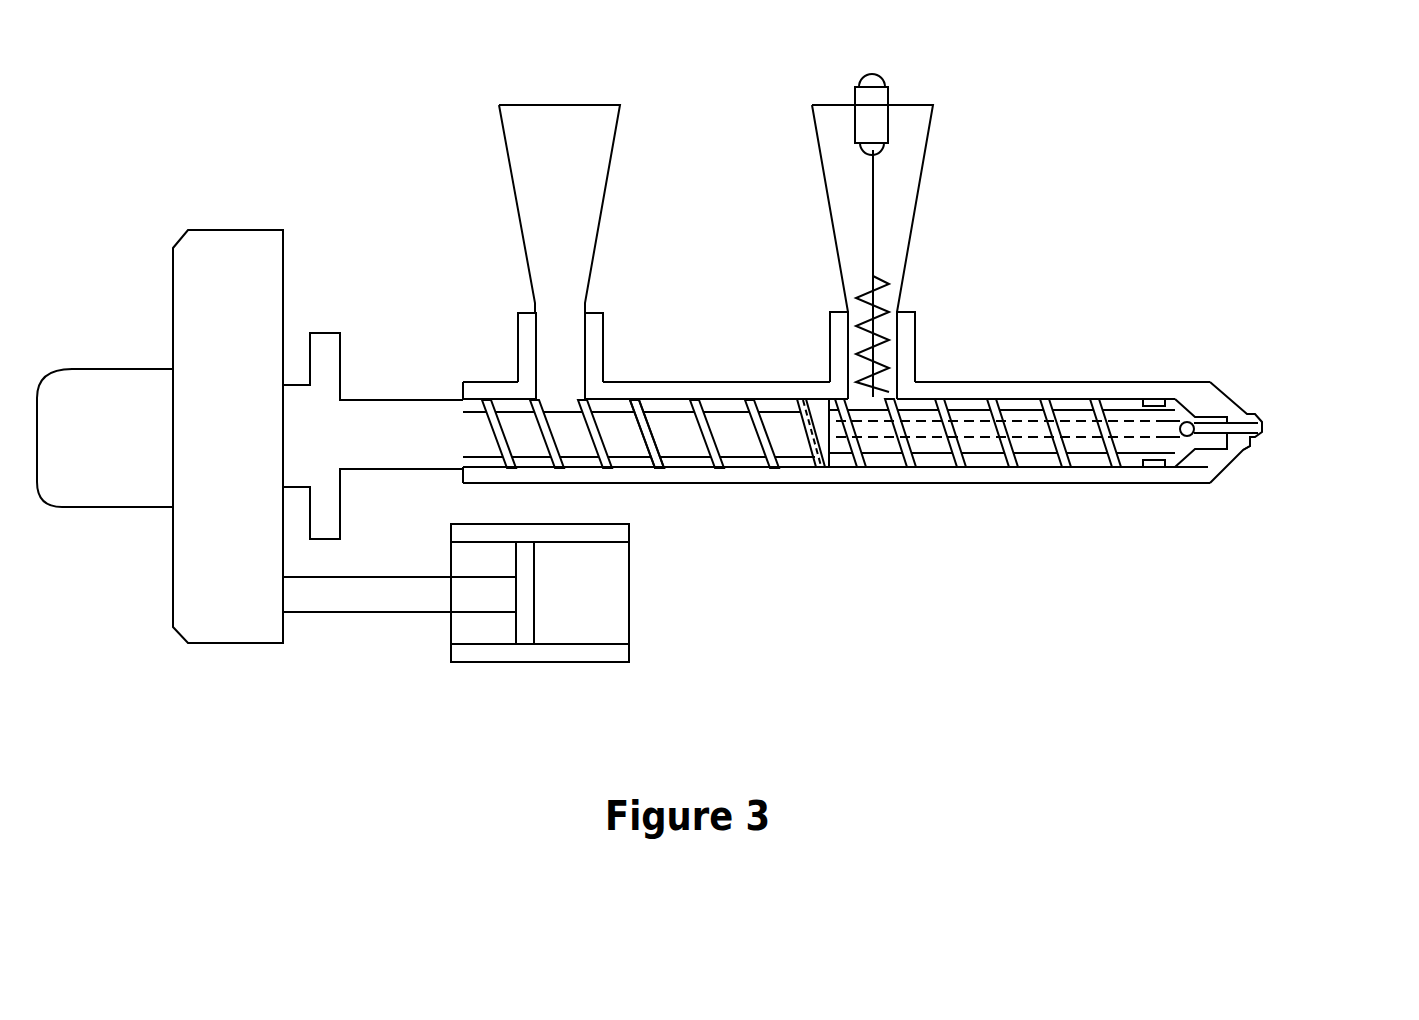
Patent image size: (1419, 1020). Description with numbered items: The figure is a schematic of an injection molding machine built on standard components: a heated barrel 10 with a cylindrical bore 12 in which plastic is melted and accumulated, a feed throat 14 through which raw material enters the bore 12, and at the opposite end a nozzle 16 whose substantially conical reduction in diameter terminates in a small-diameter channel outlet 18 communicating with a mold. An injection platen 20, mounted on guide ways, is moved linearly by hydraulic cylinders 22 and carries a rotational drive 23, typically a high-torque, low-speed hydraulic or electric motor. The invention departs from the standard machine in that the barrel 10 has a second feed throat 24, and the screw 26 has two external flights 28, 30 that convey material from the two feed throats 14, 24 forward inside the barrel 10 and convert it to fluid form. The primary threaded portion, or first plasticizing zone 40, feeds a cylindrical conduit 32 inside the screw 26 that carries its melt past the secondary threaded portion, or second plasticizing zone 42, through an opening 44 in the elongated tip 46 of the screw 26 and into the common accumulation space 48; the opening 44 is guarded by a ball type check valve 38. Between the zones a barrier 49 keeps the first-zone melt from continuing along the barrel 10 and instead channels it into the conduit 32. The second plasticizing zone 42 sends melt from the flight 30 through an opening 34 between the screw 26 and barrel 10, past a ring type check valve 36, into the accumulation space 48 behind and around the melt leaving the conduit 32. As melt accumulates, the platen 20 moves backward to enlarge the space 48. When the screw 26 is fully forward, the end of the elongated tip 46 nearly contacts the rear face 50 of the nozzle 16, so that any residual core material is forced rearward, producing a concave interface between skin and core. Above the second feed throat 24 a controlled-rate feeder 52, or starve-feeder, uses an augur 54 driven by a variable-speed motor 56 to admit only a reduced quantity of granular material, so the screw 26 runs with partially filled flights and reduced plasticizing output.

The barrel 10 is at (836, 386).
The cylindrical bore 12 is at (373, 424).
The feed throat 14 is at (611, 209).
The nozzle 16 is at (1181, 519).
The channel outlet 18 is at (1298, 478).
The injection platen 20 is at (287, 425).
The hydraulic cylinders 22 is at (489, 593).
The rotational drive 23 is at (159, 325).
The second feed throat 24 is at (921, 208).
The screw 26 is at (662, 474).
The flight 28 is at (696, 488).
The flight 30 is at (978, 474).
The conduit 32 is at (1126, 329).
The opening 34 is at (1222, 388).
The ring type check valve 36 is at (1214, 339).
The ball type check valve 38 is at (1253, 382).
The first plasticizing zone 40 is at (697, 361).
The second plasticizing zone 42 is at (1002, 345).
The opening 44 is at (1285, 402).
The tip 46 is at (1146, 525).
The common accumulation space 48 is at (1114, 505).
The barrier 49 is at (1008, 507).
The rear face 50 is at (1323, 449).
The controlled-rate feeder 52 is at (930, 92).
The augur 54 is at (938, 328).
The variable-speed motor 56 is at (927, 232).